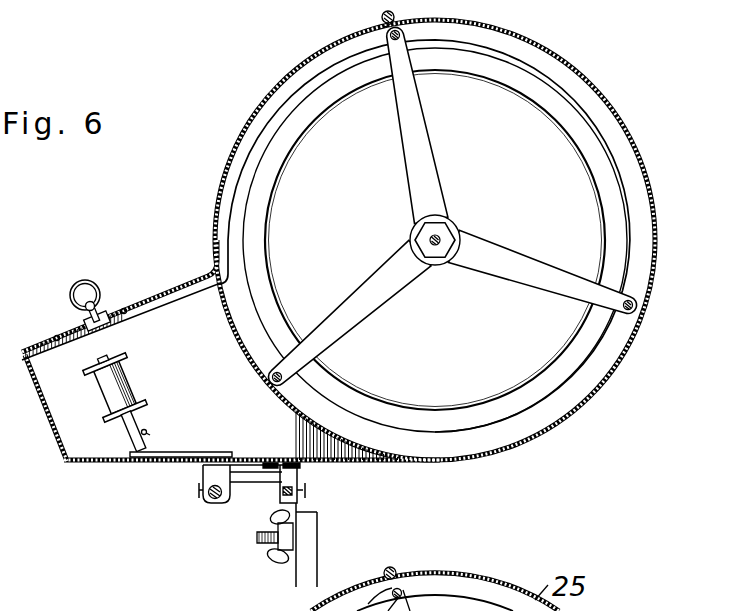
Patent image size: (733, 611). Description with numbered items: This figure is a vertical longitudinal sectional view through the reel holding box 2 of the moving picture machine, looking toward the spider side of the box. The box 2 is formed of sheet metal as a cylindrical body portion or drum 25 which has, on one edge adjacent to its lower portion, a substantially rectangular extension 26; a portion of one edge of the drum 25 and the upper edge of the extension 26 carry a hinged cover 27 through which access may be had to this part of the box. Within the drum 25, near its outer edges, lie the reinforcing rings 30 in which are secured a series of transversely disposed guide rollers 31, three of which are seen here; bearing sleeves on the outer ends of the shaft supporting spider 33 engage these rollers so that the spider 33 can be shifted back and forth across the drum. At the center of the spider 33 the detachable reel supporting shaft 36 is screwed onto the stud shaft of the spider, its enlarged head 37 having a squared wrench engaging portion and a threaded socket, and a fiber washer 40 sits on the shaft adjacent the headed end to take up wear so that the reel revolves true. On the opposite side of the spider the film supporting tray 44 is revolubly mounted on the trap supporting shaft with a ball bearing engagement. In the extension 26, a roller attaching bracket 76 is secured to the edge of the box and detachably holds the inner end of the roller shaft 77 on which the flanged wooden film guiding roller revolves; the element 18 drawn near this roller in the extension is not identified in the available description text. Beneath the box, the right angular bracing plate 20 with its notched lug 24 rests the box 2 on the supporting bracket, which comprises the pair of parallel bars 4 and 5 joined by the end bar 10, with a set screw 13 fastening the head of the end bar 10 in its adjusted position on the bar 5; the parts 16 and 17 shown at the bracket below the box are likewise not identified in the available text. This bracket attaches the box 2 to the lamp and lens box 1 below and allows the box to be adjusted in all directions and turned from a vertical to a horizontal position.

The lamp and lens box 1 is at (309, 547).
The reel holding box 2 is at (338, 240).
The bar 4 is at (284, 494).
The bar 5 is at (214, 499).
The end bar 10 is at (247, 479).
The set screw 13 is at (212, 502).
The wing nut 16 is at (292, 563).
The clamp screw 17 is at (309, 492).
The spool 18 is at (128, 376).
The bracing plate 20 is at (282, 459).
The notched lug 24 is at (212, 473).
The cylindrical body portion or drum 25 is at (603, 107).
The rectangular extension 26 is at (53, 407).
The hinged cover 27 is at (216, 206).
The reinforcing rings 30 is at (236, 315).
The guide rollers 31 is at (393, 70).
The shaft supporting spider 33 is at (440, 172).
The reel supporting shaft 36 is at (440, 236).
The enlarged head 37 is at (418, 229).
The fiber washer 40 is at (432, 258).
The film supporting tray 44 is at (435, 240).
The roller attaching bracket 76 is at (179, 454).
The roller shaft 77 is at (137, 420).